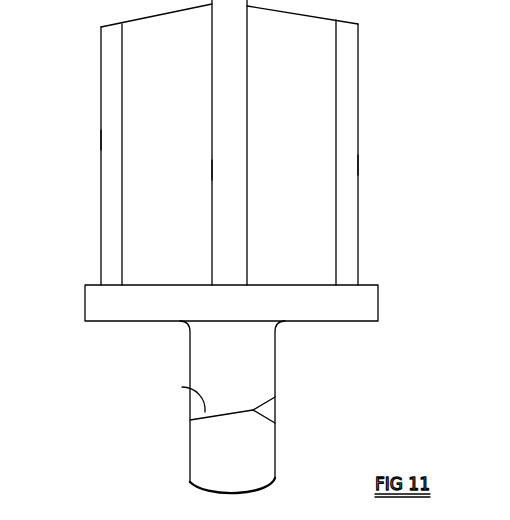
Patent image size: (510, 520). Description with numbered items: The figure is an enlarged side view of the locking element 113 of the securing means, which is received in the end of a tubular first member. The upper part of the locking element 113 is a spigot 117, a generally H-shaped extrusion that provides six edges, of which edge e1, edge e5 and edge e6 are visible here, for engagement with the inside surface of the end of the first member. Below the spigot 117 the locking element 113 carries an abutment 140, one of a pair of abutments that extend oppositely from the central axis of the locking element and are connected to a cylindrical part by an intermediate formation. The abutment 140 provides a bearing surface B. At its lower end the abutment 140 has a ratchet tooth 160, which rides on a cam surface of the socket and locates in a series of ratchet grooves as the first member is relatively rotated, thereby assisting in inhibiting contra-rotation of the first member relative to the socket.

The spigot 117 is at (361, 105).
The locking element 113 is at (83, 308).
The abutment 140 is at (267, 446).
The ratchet tooth 160 is at (263, 402).
The bearing surface B is at (182, 387).
The edge e1 is at (102, 138).
The edge e5 is at (352, 172).
The edge e6 is at (227, 160).